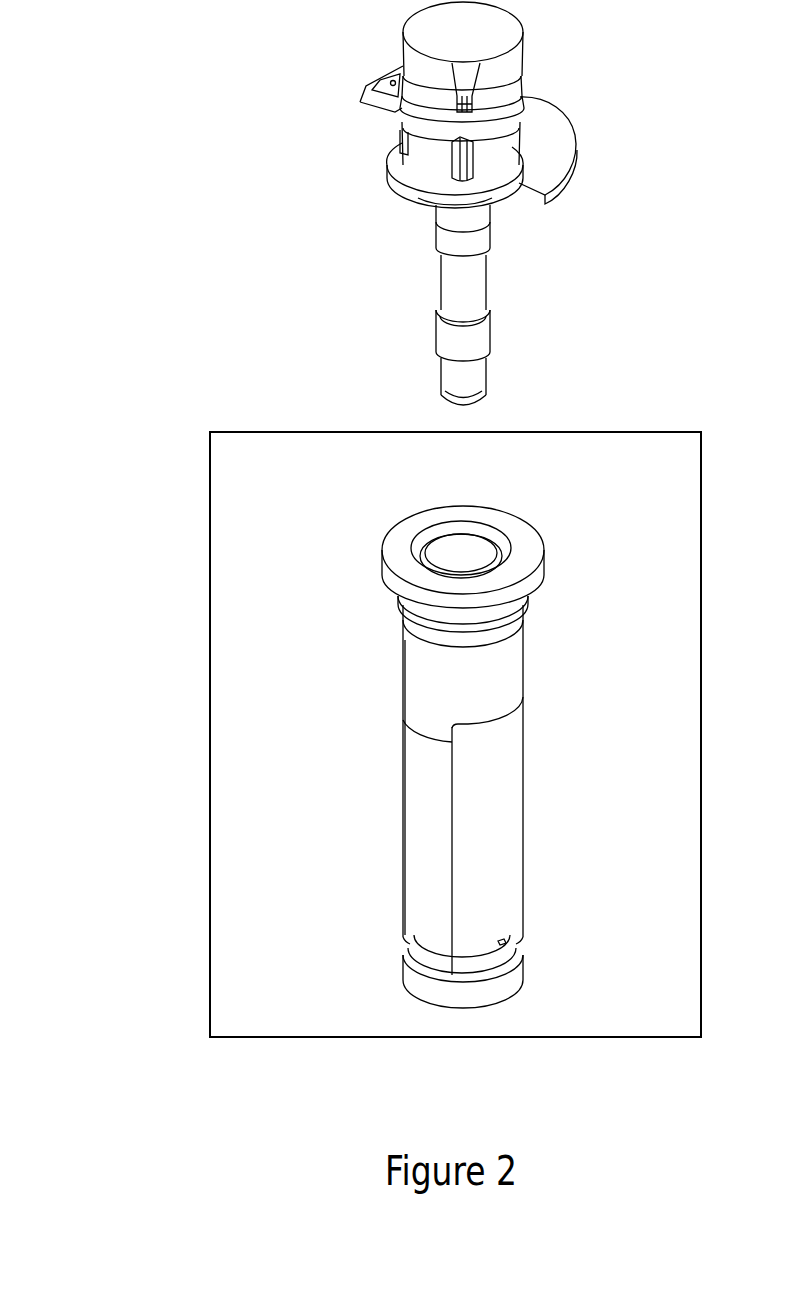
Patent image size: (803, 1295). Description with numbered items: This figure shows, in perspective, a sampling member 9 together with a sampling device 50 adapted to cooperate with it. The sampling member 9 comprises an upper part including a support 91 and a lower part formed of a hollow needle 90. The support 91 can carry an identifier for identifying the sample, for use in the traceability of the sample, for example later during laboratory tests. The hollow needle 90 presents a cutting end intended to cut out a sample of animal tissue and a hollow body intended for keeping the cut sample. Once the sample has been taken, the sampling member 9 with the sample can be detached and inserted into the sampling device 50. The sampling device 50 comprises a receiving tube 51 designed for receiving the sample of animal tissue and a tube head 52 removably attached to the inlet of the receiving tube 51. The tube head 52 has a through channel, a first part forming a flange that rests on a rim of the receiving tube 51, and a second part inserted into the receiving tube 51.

The sampling member 9 is at (435, 203).
The hollow needle 90 is at (467, 383).
The support 91 is at (556, 148).
The sampling device 50 is at (370, 734).
The receiving tube 51 is at (398, 687).
The tube head 52 is at (395, 538).